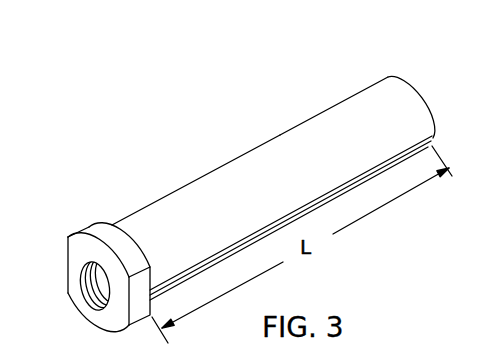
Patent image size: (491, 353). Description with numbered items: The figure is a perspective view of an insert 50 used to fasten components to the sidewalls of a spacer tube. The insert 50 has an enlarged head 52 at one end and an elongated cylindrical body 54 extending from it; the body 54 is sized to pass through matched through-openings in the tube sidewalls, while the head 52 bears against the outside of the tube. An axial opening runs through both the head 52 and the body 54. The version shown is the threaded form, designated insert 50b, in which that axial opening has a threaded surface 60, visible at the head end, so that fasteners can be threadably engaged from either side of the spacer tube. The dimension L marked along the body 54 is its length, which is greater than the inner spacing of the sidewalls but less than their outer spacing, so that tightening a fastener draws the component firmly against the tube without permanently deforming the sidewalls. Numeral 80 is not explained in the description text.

The fastener assembly 80 is at (114, 6).
The insert 50 is at (411, 80).
The threaded-form insert 50b is at (337, 105).
The enlarged head 52 is at (111, 222).
The body 54 is at (222, 166).
The threaded surface 60 is at (91, 286).